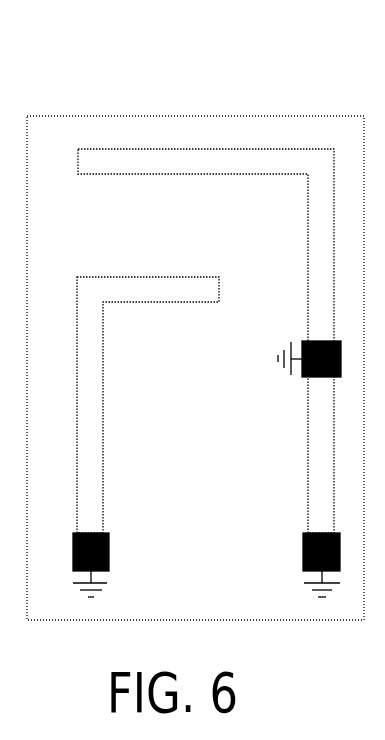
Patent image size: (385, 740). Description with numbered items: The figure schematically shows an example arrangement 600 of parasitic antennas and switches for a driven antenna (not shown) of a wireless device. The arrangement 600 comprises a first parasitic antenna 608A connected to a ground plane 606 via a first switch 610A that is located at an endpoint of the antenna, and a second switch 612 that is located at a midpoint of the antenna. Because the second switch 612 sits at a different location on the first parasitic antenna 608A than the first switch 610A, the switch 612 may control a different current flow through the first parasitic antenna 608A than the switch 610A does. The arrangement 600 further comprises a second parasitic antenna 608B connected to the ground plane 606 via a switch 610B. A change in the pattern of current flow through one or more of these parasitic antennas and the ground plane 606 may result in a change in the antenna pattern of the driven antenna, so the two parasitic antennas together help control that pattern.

The arrangement 600 is at (99, 62).
The ground plane 606 is at (223, 578).
The first parasitic antenna 608A is at (308, 203).
The second parasitic antenna 608B is at (179, 276).
The first switch 610A is at (303, 550).
The switch 610B is at (109, 552).
The second switch 612 is at (303, 342).